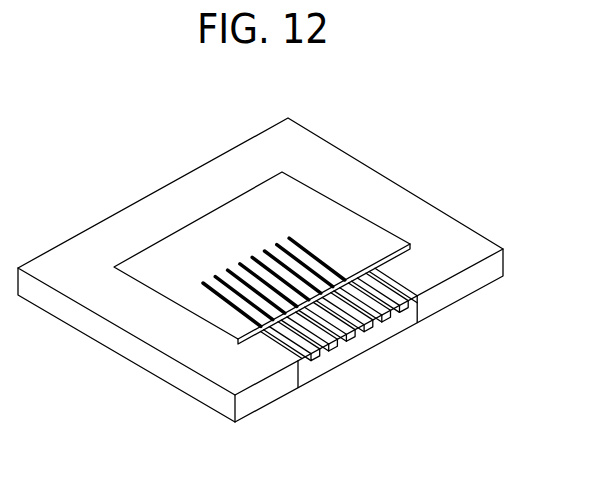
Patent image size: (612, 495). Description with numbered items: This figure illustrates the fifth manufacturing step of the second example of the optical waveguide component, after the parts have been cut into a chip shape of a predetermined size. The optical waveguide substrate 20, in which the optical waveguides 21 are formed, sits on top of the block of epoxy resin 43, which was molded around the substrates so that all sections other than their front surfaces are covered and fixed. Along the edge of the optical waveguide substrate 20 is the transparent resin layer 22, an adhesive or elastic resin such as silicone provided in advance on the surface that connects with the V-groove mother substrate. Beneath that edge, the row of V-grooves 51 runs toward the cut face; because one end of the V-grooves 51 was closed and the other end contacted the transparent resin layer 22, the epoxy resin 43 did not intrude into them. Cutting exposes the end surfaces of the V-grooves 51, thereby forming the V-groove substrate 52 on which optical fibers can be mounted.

The optical waveguide substrate 20 is at (291, 194).
The optical waveguides 21 is at (318, 249).
The transparent resin layer 22 is at (397, 246).
The epoxy resin 43 is at (137, 310).
The V-grooves 51 is at (369, 328).
The V-groove substrate 52 is at (302, 366).